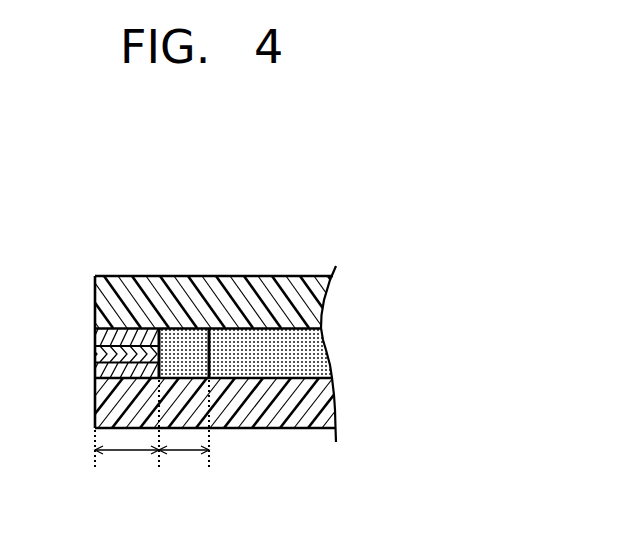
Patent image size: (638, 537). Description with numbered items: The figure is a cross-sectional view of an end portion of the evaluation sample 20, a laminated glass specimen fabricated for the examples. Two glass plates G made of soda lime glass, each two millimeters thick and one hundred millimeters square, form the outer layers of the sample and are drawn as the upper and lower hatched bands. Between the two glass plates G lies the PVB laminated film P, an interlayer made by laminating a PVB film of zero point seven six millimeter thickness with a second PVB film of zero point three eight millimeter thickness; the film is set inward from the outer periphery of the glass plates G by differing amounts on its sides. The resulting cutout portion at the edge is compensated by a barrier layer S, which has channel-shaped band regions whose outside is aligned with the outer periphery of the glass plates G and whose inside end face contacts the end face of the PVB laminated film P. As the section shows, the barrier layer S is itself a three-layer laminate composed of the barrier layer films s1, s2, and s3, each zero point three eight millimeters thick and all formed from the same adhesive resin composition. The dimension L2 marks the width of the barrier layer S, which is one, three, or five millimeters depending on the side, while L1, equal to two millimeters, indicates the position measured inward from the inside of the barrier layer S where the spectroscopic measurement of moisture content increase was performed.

The evaluation sample 20 is at (185, 215).
The glass plate G is at (108, 305).
The barrier layer S is at (38, 330).
The barrier layer film s1 is at (96, 337).
The barrier layer film s2 is at (96, 356).
The barrier layer film s3 is at (96, 373).
The PVB laminated film P is at (216, 347).
The measurement position distance L1 is at (184, 436).
The barrier layer width L2 is at (127, 435).